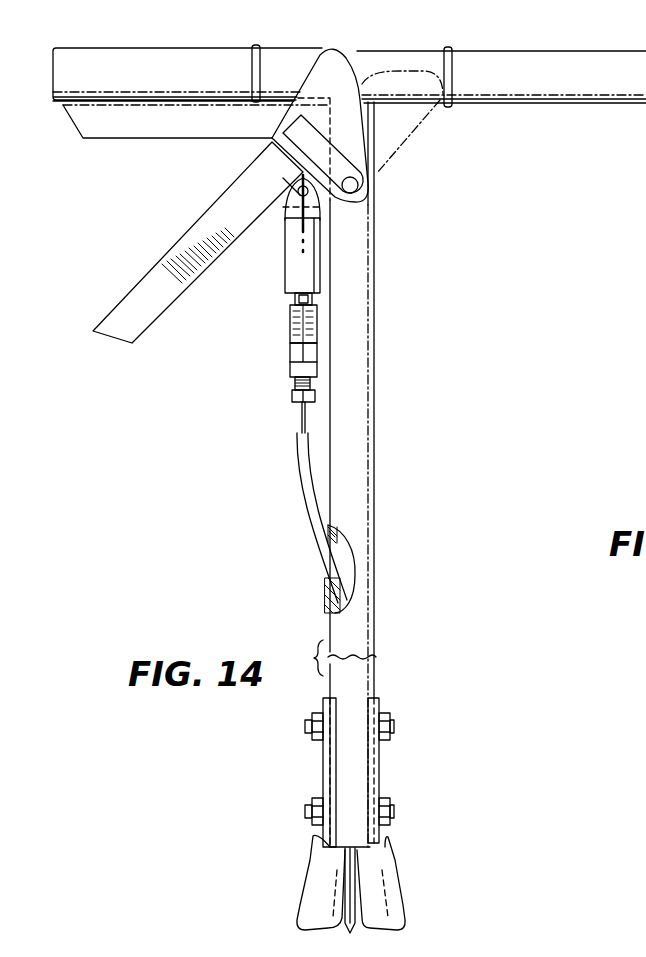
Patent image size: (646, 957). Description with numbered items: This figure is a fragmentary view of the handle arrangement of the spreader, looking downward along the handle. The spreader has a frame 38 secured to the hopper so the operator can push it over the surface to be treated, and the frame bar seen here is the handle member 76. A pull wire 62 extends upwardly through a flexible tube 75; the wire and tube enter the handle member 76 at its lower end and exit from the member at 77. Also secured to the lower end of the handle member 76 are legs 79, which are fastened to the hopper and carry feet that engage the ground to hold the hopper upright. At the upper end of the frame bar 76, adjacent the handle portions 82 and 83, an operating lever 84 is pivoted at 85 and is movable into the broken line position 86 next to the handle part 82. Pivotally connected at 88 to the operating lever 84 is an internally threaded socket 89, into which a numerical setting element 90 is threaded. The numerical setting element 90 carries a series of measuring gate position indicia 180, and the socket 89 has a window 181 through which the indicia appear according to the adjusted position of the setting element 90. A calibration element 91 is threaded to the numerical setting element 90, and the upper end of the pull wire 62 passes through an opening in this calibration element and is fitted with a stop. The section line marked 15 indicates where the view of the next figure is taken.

The handle portion 82 is at (217, 54).
The handle portion 83 is at (527, 57).
The operating lever 84 is at (185, 238).
The pivot 85 is at (357, 190).
The broken line position 86 is at (128, 142).
The pivotal connection 88 is at (290, 200).
The internally threaded socket 89 is at (295, 278).
The numerical setting element 90 is at (288, 345).
The calibration element 91 is at (292, 395).
The measuring gate position indicia 180 is at (310, 323).
The window 181 is at (290, 302).
The pull wire 62 is at (302, 425).
The handle member 76 is at (377, 383).
The frame 38 is at (377, 460).
The exit point 77 is at (332, 558).
The flexible tube 75 is at (350, 862).
The legs 79 is at (308, 895).
The section line FIG. 15 is at (278, 165).